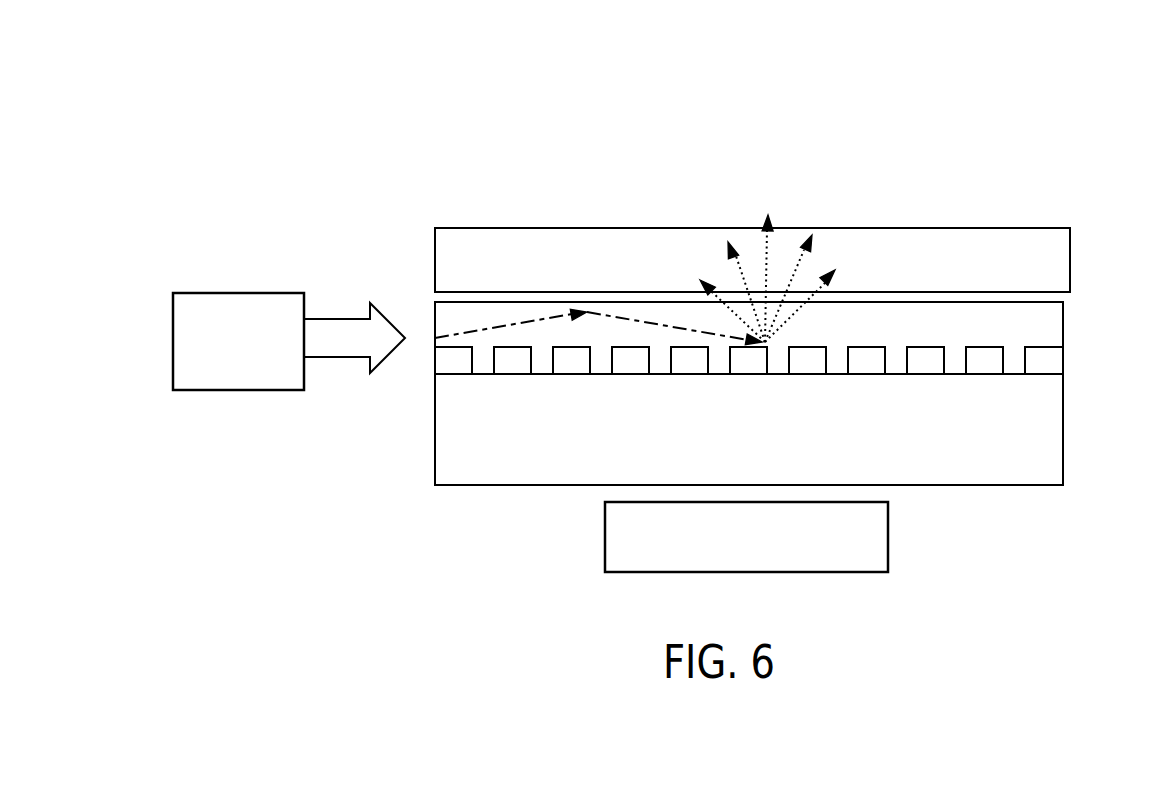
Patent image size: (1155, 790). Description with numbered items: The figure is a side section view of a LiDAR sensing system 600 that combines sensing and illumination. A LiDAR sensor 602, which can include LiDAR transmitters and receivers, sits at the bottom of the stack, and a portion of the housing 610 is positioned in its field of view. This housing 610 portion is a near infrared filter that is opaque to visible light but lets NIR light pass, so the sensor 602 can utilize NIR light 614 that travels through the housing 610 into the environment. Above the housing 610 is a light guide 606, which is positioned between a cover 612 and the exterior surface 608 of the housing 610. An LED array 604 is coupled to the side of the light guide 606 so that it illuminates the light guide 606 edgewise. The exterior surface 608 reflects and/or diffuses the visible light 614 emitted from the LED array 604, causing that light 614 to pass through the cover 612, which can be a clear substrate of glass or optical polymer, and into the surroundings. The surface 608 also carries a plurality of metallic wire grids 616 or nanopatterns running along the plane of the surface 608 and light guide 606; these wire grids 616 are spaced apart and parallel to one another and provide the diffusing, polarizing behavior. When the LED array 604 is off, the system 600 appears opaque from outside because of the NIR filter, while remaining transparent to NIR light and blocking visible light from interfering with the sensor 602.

The LiDAR sensing system 600 is at (160, 144).
The LiDAR sensor 602 is at (888, 538).
The LED array 604 is at (182, 342).
The light guide 606 is at (1045, 327).
The exterior surface 608 is at (660, 370).
The housing 610 is at (1053, 441).
The cover 612 is at (1059, 253).
The light 614 is at (762, 335).
The metallic wire grids 616 is at (630, 355).